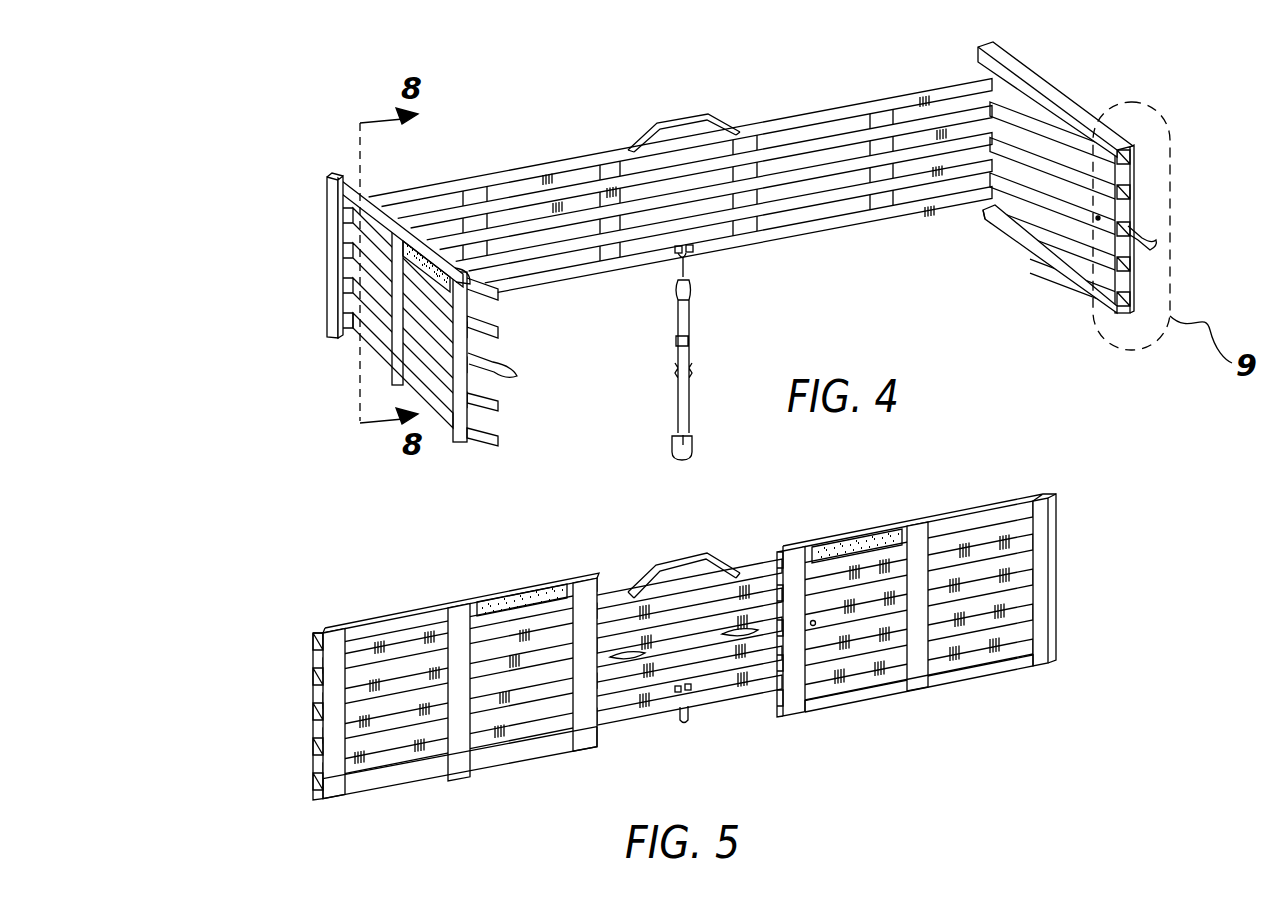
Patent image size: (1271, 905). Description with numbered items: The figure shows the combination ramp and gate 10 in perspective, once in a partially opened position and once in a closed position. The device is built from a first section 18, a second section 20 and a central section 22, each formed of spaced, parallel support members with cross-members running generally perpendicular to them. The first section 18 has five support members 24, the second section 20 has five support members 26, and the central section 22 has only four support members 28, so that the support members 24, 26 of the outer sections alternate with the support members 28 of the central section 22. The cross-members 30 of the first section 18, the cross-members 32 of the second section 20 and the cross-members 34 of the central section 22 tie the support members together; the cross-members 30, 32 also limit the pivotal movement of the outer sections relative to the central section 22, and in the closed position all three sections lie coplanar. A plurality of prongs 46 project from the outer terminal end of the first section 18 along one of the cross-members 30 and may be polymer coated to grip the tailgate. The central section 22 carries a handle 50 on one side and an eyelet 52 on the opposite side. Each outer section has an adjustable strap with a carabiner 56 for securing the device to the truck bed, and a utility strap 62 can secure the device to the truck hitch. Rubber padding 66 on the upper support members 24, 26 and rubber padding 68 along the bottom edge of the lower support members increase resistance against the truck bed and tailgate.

In FIG. 4, the combination ramp and gate 10 is at (734, 257).
In FIG. 5, the combination ramp and gate 10 is at (762, 640).
In FIG. 4, the first section 18 is at (403, 264).
In FIG. 5, the first section 18 is at (454, 684).
In FIG. 4, the second section 20 is at (1056, 157).
In FIG. 5, the second section 20 is at (954, 586).
In FIG. 4, the central section 22 is at (680, 194).
In FIG. 5, the central section 22 is at (694, 634).
In FIG. 4, the support members 24 is at (356, 270).
In FIG. 5, the support members 24 is at (358, 636).
In FIG. 4, the support members 26 is at (1048, 142).
In FIG. 5, the support members 26 is at (1017, 583).
In FIG. 4, the support members 28 is at (907, 150).
In FIG. 5, the support members 28 is at (712, 712).
In FIG. 4, the cross-members 30 is at (397, 336).
In FIG. 5, the cross-members 30 is at (460, 742).
In FIG. 4, the cross-members 32 is at (895, 200).
In FIG. 5, the cross-members 32 is at (920, 652).
In FIG. 5, the cross-members 34 is at (745, 662).
In FIG. 4, the prongs 46 is at (499, 333).
In FIG. 4, the handle 50 is at (688, 112).
In FIG. 5, the handle 50 is at (750, 562).
In FIG. 4, the eyelet 52 is at (697, 268).
In FIG. 4, the carabiner 56 is at (517, 372).
In FIG. 4, the utility strap 62 is at (653, 424).
In FIG. 5, the rubber padding 66 is at (535, 603).
In FIG. 4, the rubber padding 68 is at (445, 436).
In FIG. 5, the rubber padding 68 is at (395, 792).